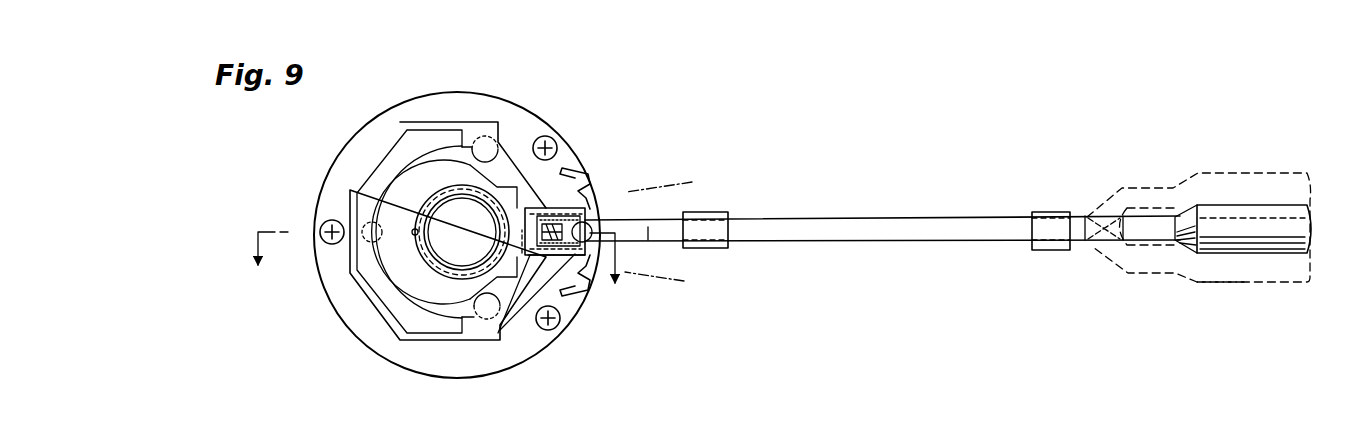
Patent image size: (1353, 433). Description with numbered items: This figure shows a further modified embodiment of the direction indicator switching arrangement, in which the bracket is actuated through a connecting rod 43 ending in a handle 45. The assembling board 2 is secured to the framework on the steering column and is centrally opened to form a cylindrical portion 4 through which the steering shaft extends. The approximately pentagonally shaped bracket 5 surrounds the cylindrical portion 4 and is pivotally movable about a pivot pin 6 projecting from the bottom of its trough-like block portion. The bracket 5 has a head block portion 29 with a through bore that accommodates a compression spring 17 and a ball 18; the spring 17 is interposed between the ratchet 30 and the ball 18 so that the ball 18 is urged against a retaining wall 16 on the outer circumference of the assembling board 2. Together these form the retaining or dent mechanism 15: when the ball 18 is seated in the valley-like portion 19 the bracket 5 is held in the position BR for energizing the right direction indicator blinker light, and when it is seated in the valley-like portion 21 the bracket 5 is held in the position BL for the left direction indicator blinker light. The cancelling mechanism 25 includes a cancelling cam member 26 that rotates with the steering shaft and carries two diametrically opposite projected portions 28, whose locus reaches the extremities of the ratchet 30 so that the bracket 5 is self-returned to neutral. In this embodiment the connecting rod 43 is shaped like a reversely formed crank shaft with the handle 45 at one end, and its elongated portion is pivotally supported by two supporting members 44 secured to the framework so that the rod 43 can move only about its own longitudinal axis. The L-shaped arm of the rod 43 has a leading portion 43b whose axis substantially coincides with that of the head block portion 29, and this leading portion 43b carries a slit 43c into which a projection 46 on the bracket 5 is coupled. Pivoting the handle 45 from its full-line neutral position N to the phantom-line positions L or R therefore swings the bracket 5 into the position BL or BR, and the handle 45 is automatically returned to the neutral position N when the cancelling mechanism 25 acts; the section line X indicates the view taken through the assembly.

The assembling board 2 is at (522, 115).
The cylindrical portion 4 is at (458, 203).
The bracket 5 is at (442, 342).
The pivot pin 6 is at (372, 222).
The retaining (dent) mechanism 15 is at (617, 175).
The retaining wall 16 is at (595, 204).
The spring 17 is at (522, 253).
The ball 18 is at (592, 233).
The valley-like portion 19 is at (602, 282).
The valley-like portion 21 is at (548, 212).
The cancelling mechanism 25 is at (425, 287).
The cancelling cam member 26 is at (418, 266).
The projected portions 28 is at (460, 188).
The head block portion 29 is at (537, 256).
The ratchet 30 is at (518, 197).
The connecting rod 43 is at (877, 220).
The leading portion 43b is at (648, 238).
The slit 43c is at (537, 208).
The supporting members 44 is at (728, 213).
The handle 45 is at (1310, 227).
The projection 46 is at (553, 220).
The neutral position N is at (1227, 205).
The leftward actuating position L is at (1260, 173).
The rightward actuating position R is at (1247, 282).
The position for energizing the right direction indicator blinker light BR is at (676, 183).
The position for energizing the left direction indicator blinker light BL is at (673, 283).
The section line X is at (436, 275).